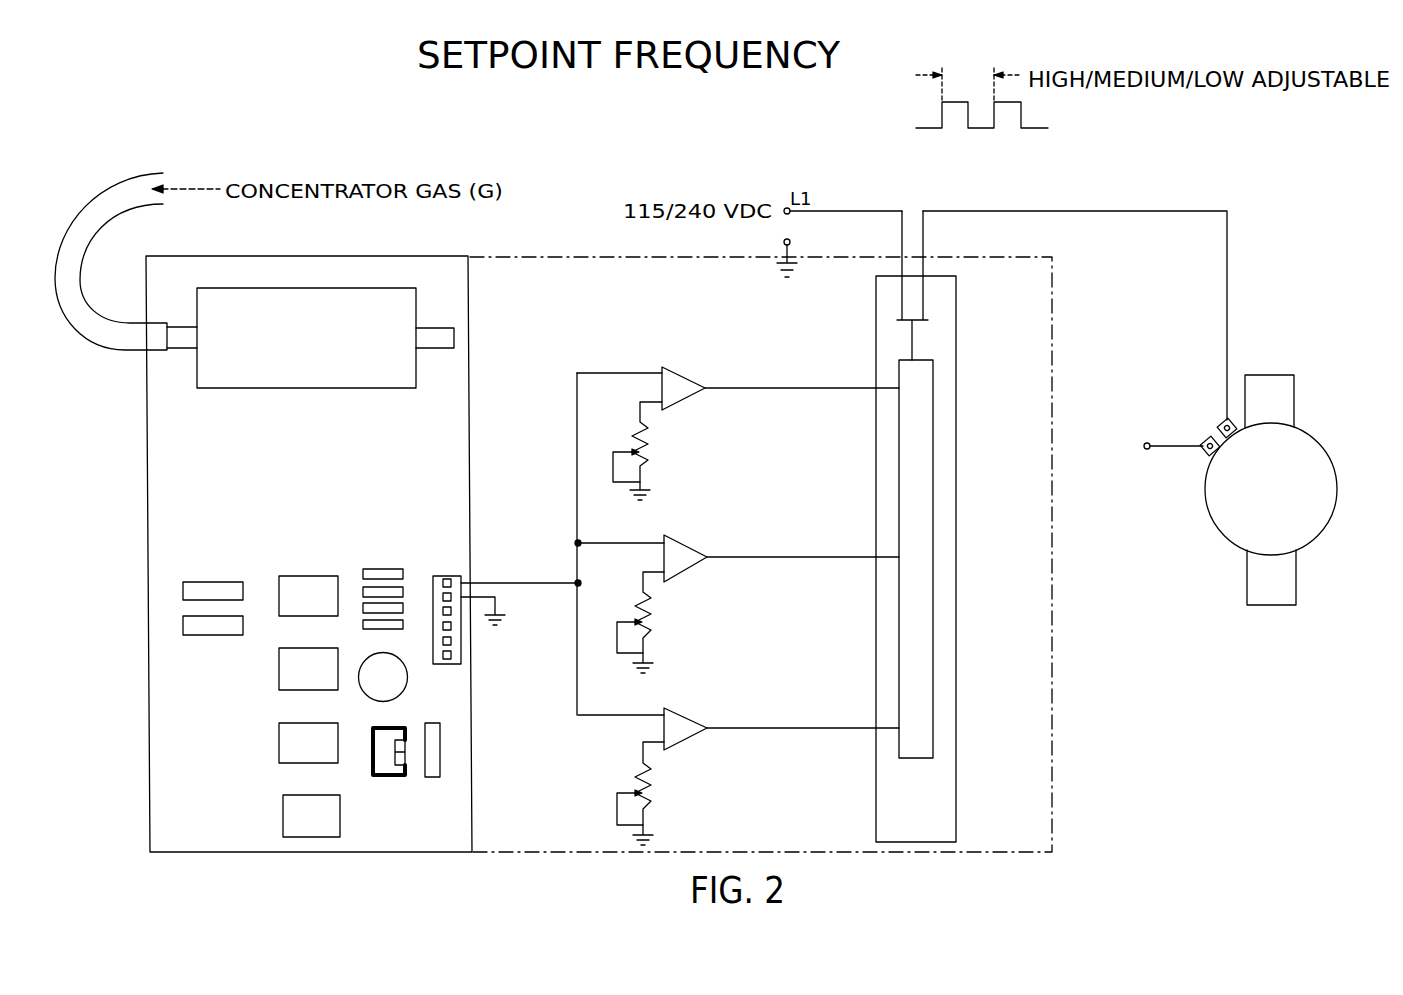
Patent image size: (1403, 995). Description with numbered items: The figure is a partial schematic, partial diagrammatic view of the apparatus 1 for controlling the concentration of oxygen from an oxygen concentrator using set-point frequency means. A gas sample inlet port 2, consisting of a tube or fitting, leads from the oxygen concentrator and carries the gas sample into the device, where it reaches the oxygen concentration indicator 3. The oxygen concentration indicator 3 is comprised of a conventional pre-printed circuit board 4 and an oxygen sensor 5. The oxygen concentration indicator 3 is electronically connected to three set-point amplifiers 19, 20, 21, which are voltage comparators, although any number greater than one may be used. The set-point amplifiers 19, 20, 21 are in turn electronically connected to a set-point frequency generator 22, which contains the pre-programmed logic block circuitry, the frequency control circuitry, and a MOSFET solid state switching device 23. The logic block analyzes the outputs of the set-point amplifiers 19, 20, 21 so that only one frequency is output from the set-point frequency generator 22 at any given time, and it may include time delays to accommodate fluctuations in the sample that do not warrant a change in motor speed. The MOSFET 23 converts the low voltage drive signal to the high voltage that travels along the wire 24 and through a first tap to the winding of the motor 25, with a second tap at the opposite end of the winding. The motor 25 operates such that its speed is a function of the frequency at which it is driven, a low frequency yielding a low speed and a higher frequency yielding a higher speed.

The apparatus for controlling oxygen concentration 1 is at (611, 257).
The gas sample inlet port 2 is at (90, 247).
The oxygen concentration indicator 3 is at (468, 393).
The pre-printed circuit board 4 is at (423, 510).
The oxygen sensor 5 is at (393, 306).
The set-point amplifier 19 is at (690, 378).
The set-point amplifier 20 is at (692, 545).
The set-point amplifier 21 is at (695, 718).
The set-point frequency generator 22 is at (933, 775).
The MOSFET solid state switching device 23 is at (928, 318).
The wire 24 is at (1227, 305).
The motor 25 is at (1313, 442).